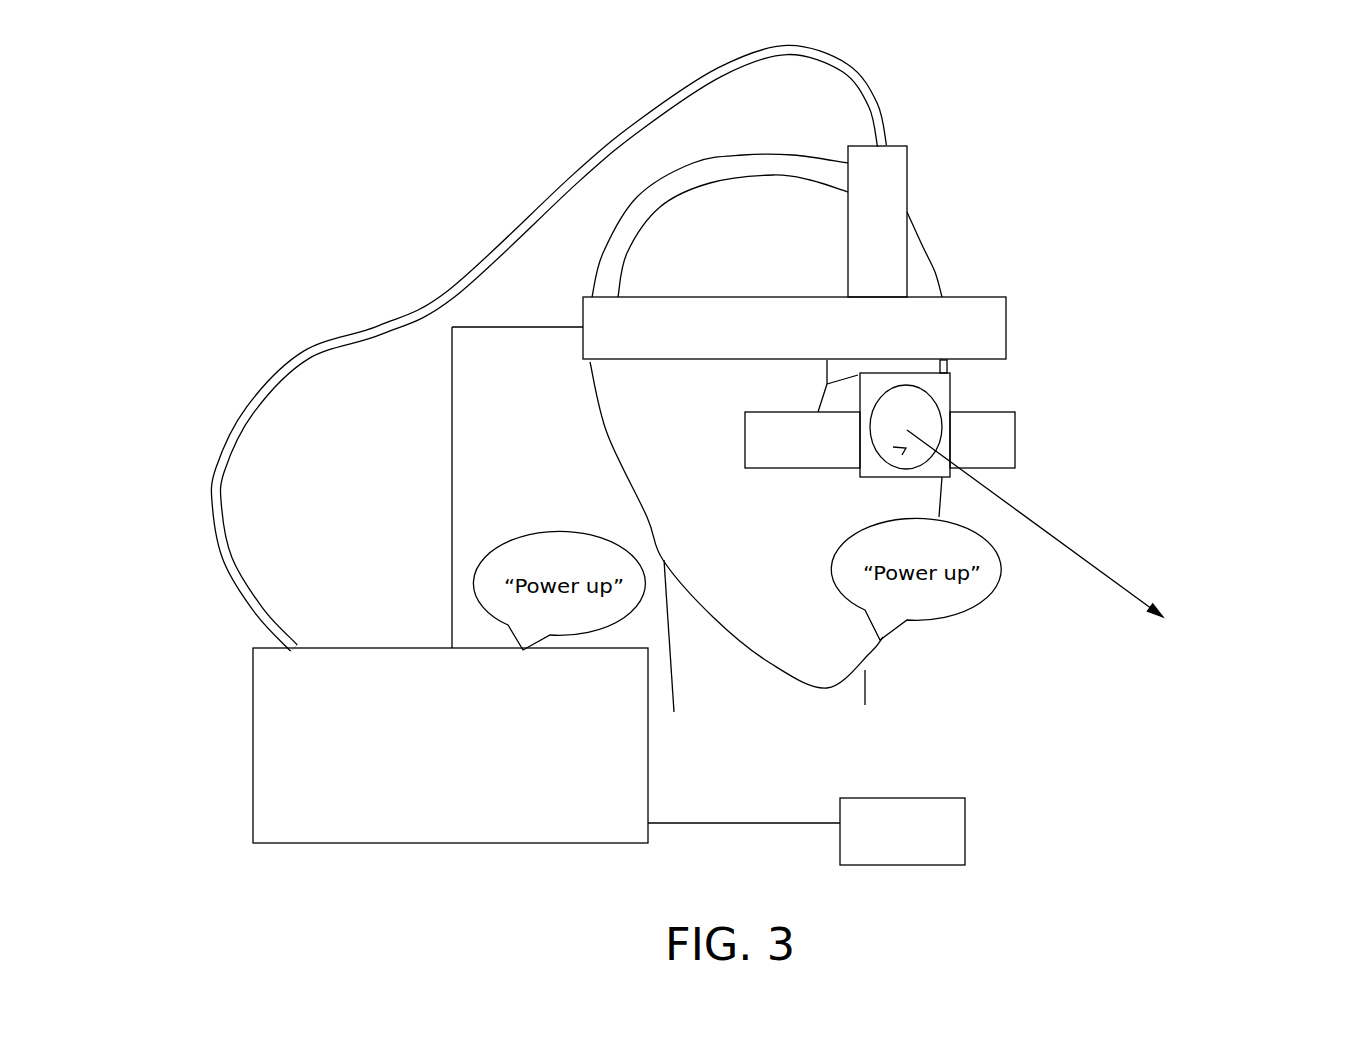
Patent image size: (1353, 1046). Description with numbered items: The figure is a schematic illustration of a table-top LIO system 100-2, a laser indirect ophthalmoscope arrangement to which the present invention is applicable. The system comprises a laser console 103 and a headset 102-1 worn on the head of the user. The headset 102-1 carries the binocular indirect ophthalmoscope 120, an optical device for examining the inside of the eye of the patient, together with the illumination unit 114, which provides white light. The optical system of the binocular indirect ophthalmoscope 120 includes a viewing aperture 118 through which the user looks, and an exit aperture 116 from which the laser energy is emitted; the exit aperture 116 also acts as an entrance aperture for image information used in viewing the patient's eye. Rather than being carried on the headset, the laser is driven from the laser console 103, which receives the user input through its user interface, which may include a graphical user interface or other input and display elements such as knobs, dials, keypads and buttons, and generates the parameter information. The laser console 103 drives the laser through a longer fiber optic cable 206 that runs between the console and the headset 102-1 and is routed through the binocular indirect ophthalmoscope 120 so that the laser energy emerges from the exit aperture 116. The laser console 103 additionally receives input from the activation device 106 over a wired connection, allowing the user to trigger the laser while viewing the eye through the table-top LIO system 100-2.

The table-top LIO system 100-2 is at (1170, 140).
The head-mounted device 102-1 is at (680, 160).
The laser console 103 is at (253, 700).
The activation device 106 is at (965, 832).
The illumination unit 114 is at (907, 207).
The exit aperture 116 is at (908, 453).
The viewing aperture 118 is at (745, 445).
The binocular indirect ophthalmoscope 120 is at (1020, 425).
The fiber optic cable 206 is at (301, 355).